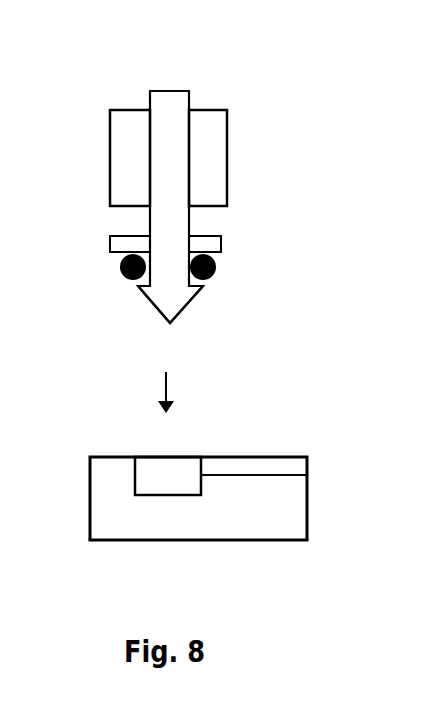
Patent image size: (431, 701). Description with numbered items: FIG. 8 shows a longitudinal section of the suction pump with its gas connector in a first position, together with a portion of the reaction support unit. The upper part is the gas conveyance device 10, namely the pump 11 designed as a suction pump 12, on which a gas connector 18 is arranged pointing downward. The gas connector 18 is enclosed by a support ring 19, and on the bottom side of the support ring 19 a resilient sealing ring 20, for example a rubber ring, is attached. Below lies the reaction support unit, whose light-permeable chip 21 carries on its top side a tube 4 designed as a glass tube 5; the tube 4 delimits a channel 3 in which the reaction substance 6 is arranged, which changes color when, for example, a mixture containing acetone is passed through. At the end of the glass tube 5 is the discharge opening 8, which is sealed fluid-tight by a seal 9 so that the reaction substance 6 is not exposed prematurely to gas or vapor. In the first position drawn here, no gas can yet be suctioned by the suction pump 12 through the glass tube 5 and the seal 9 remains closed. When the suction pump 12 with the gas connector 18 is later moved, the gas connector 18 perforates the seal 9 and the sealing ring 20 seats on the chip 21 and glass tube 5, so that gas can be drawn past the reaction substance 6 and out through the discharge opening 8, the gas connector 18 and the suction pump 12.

The channel 3 is at (274, 440).
The tube 4 is at (284, 505).
The glass tube 5 is at (250, 480).
The reaction substance 6 is at (282, 470).
The discharge opening 8 is at (160, 480).
The seal 9 is at (88, 454).
The gas conveyance device 10 is at (225, 181).
The pump 11 is at (225, 181).
The suction pump 12 is at (215, 136).
The gas connector 18 is at (175, 306).
The support ring 19 is at (218, 246).
The sealing ring 20 is at (123, 277).
The chip 21 is at (253, 525).